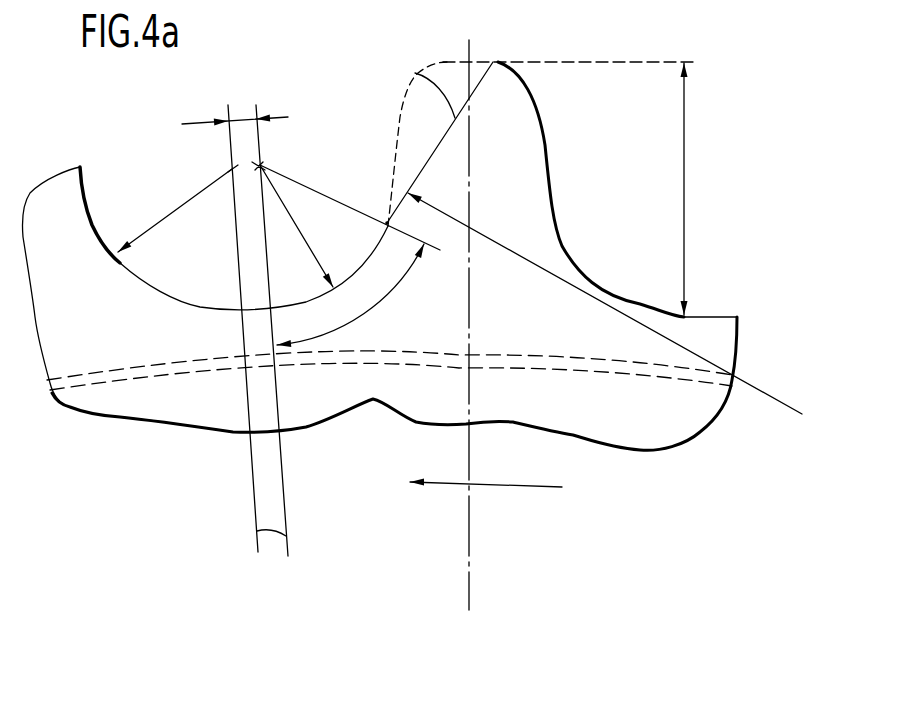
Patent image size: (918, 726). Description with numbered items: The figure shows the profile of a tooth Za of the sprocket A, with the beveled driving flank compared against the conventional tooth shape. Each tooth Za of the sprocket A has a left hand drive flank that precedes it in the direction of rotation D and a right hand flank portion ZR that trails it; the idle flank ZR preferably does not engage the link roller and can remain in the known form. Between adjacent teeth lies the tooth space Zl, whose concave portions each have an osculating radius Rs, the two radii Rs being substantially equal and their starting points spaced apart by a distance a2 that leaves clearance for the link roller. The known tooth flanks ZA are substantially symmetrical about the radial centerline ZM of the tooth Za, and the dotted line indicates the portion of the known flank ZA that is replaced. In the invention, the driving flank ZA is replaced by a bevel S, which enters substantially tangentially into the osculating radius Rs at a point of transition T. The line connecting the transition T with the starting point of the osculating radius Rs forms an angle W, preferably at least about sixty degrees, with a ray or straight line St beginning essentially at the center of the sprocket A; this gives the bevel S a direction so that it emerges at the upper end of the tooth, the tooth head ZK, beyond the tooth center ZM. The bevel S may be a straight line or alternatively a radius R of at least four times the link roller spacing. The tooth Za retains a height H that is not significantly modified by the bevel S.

The right hand flank portion ZR is at (83, 180).
The osculating radius Rs is at (170, 212).
The grinding wheel width a2 is at (295, 112).
The tooth space Zl is at (212, 307).
The bevel S is at (415, 73).
The tooth flank ZA is at (403, 117).
The radial centerline ZM is at (471, 53).
The tooth head ZK is at (513, 88).
The point of transition T is at (387, 223).
The tooth Za is at (526, 222).
The height H is at (684, 208).
The angle W is at (383, 304).
The radius R is at (754, 385).
The direction of rotation D is at (507, 486).
The sprocket A is at (645, 437).
The ray or straight line St is at (286, 536).